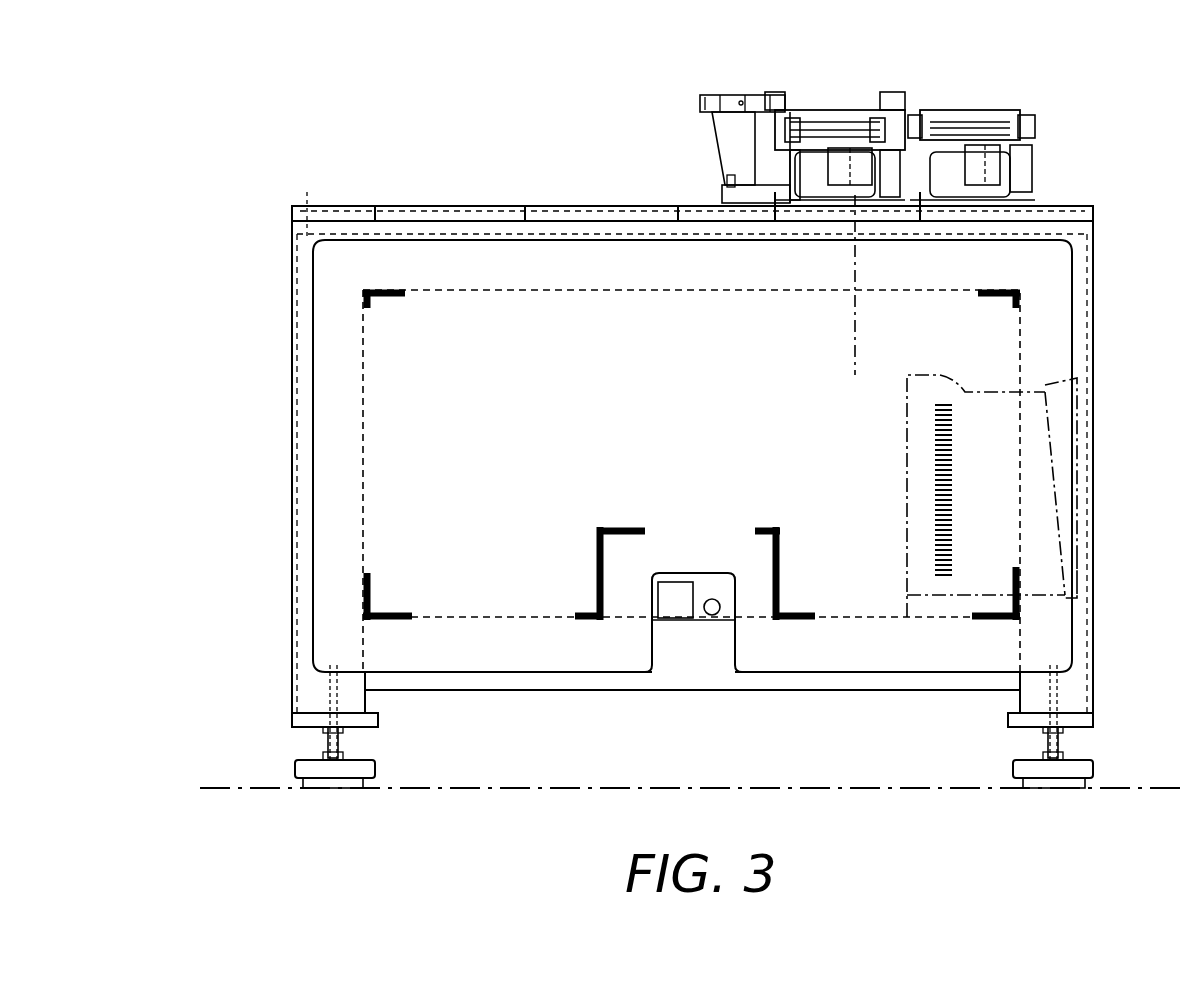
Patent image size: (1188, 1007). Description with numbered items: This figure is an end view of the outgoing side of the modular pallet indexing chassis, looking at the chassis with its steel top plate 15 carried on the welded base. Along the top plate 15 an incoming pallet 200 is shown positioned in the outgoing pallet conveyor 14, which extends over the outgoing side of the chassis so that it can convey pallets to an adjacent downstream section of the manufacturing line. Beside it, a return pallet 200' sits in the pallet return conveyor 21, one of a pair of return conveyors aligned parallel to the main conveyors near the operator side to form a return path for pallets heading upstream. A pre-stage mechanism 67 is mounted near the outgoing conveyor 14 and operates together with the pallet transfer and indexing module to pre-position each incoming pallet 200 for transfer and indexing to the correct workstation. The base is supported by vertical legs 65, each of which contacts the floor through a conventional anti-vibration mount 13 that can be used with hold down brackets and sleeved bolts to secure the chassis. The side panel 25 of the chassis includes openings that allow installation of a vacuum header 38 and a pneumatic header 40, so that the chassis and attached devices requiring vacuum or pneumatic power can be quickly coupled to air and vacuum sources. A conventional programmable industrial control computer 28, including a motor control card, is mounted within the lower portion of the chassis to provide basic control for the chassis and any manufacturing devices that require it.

The anti-vibration mount 13 is at (302, 770).
The outgoing pallet conveyor 14 is at (792, 185).
The top plate 15 is at (383, 205).
The pallet return conveyor 21 is at (1020, 155).
The side panel 25 is at (548, 392).
The programmable industrial control computer 28 is at (995, 482).
The vacuum header 38 is at (655, 618).
The pneumatic header 40 is at (712, 614).
The vertical leg 65 is at (333, 483).
The pre-stage mechanism 67 is at (722, 140).
The incoming pallet 200 is at (832, 172).
The return pallet 200' is at (1023, 115).